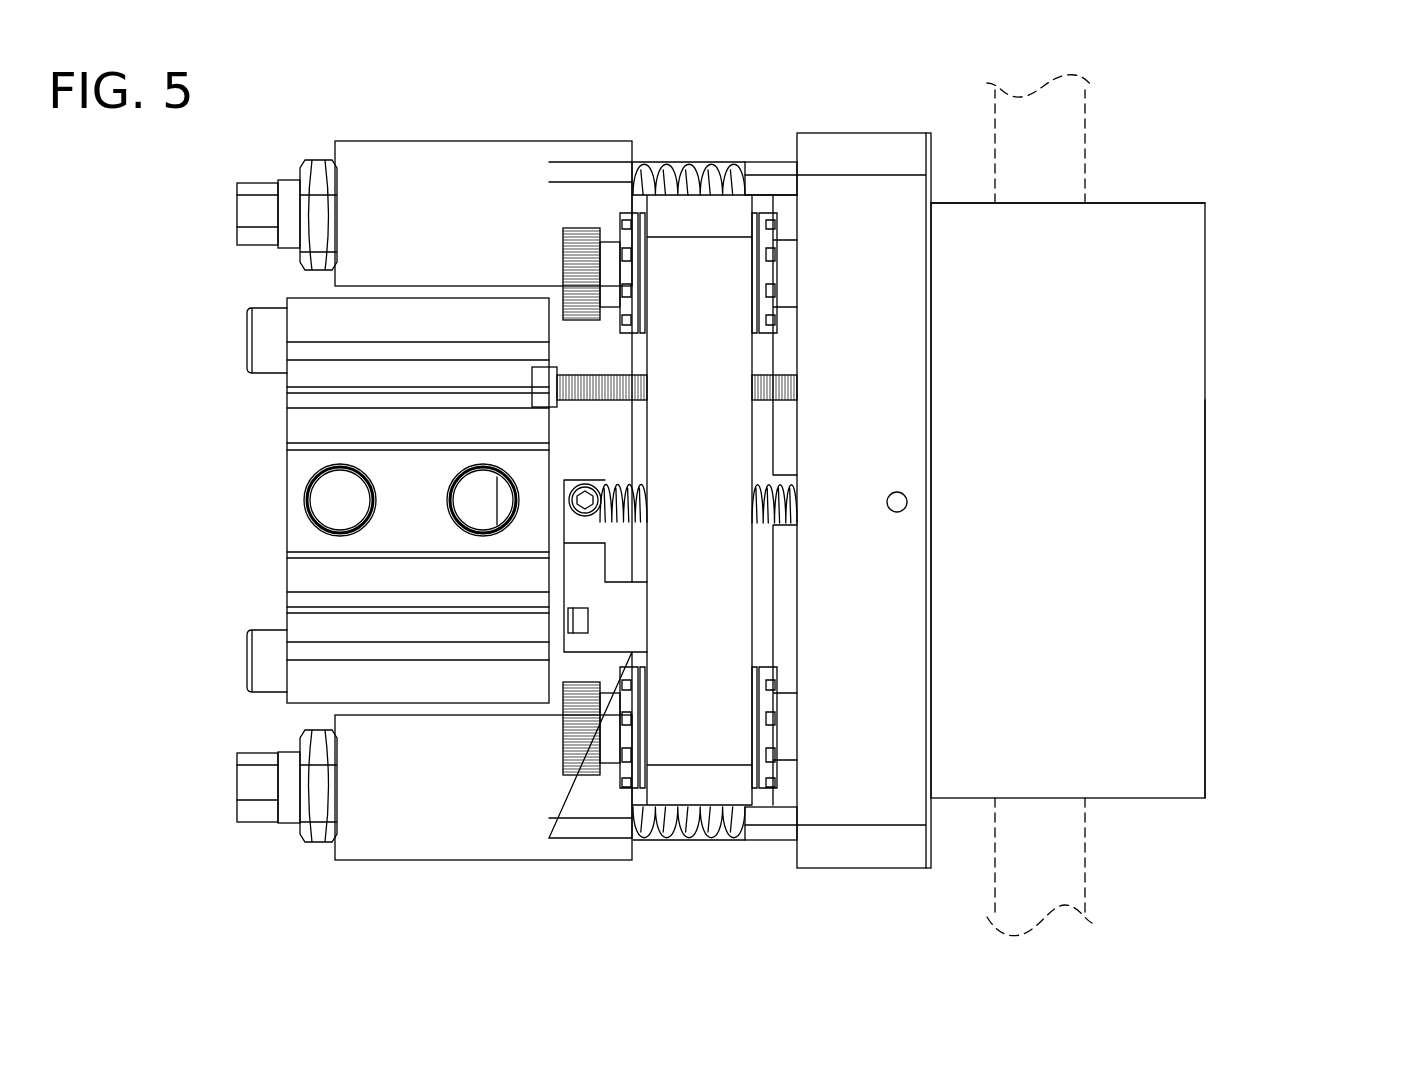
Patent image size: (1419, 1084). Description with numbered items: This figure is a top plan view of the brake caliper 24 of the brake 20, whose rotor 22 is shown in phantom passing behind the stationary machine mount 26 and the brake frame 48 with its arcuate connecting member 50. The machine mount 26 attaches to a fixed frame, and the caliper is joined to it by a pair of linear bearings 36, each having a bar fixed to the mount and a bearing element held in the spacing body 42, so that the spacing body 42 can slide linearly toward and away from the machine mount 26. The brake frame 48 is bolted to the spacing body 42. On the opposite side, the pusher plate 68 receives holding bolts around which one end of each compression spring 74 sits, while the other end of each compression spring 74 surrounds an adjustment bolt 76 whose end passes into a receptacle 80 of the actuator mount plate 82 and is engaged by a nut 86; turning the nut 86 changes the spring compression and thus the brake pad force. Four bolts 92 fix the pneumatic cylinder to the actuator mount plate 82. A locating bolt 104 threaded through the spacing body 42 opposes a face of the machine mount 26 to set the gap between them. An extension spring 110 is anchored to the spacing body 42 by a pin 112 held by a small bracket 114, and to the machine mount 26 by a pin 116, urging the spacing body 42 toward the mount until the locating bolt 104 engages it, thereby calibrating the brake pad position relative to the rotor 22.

The brake 20 is at (1375, 143).
The rotor 22 is at (1095, 875).
The brake caliper 24 is at (1215, 180).
The machine mount 26 is at (853, 132).
The linear bearing 36 is at (550, 232).
The spacing body 42 is at (716, 195).
The brake frame 48 is at (1225, 232).
The connecting member 50 is at (1180, 667).
The pusher plate 68 is at (772, 835).
The compression spring 74 is at (673, 170).
The adjustment bolt 76 is at (222, 225).
The receptacle 80 is at (402, 141).
The actuator mount plate 82 is at (586, 866).
The nut 86 is at (320, 167).
The bolt 92 is at (247, 340).
The locating bolt 104 is at (538, 387).
The extension spring 110 is at (780, 482).
The pin 112 is at (570, 523).
The bracket 114 is at (620, 618).
The pin 116 is at (900, 510).